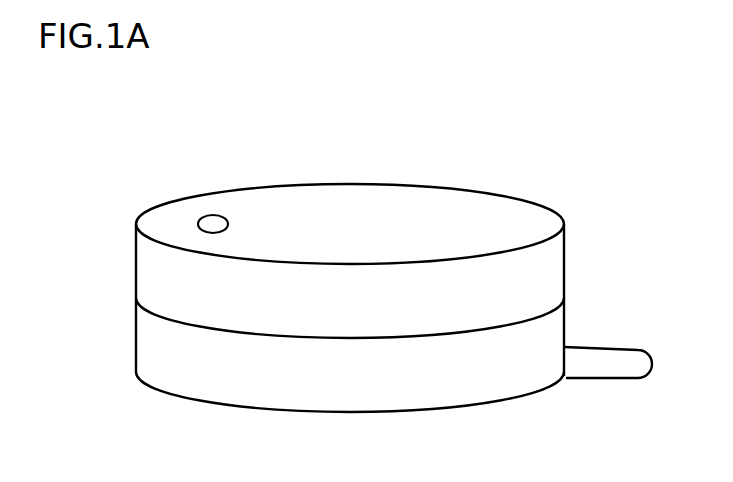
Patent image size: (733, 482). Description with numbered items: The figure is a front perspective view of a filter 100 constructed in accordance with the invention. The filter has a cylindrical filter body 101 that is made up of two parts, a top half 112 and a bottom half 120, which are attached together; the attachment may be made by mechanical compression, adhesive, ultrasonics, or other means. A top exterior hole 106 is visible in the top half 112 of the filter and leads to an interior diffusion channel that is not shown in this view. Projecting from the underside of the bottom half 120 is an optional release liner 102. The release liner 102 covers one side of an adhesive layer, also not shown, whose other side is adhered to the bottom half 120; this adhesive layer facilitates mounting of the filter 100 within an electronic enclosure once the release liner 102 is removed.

The filter 100 is at (588, 131).
The cylindrical filter body 101 is at (598, 271).
The release liner 102 is at (617, 372).
The top exterior hole 106 is at (209, 222).
The top half 112 is at (144, 266).
The bottom half 120 is at (146, 331).